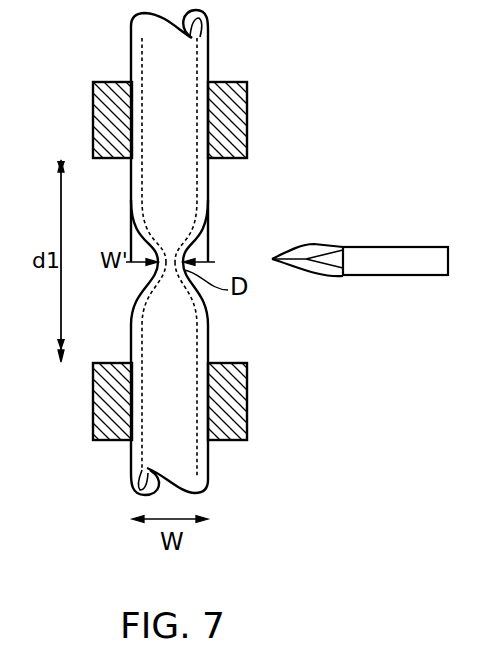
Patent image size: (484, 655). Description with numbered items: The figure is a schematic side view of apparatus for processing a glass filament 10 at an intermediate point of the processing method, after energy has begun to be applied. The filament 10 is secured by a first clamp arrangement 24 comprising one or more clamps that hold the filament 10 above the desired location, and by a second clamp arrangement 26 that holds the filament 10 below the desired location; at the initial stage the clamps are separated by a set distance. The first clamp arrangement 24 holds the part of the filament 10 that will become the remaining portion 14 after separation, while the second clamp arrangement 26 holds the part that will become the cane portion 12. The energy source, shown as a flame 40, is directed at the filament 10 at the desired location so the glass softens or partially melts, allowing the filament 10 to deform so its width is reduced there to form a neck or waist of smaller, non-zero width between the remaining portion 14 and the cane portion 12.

The filament 10 is at (172, 252).
The cane portion 12 is at (208, 343).
The remaining portion 14 is at (208, 178).
The first clamp arrangement 24 is at (93, 115).
The second clamp arrangement 26 is at (93, 416).
The flame 40 is at (316, 243).